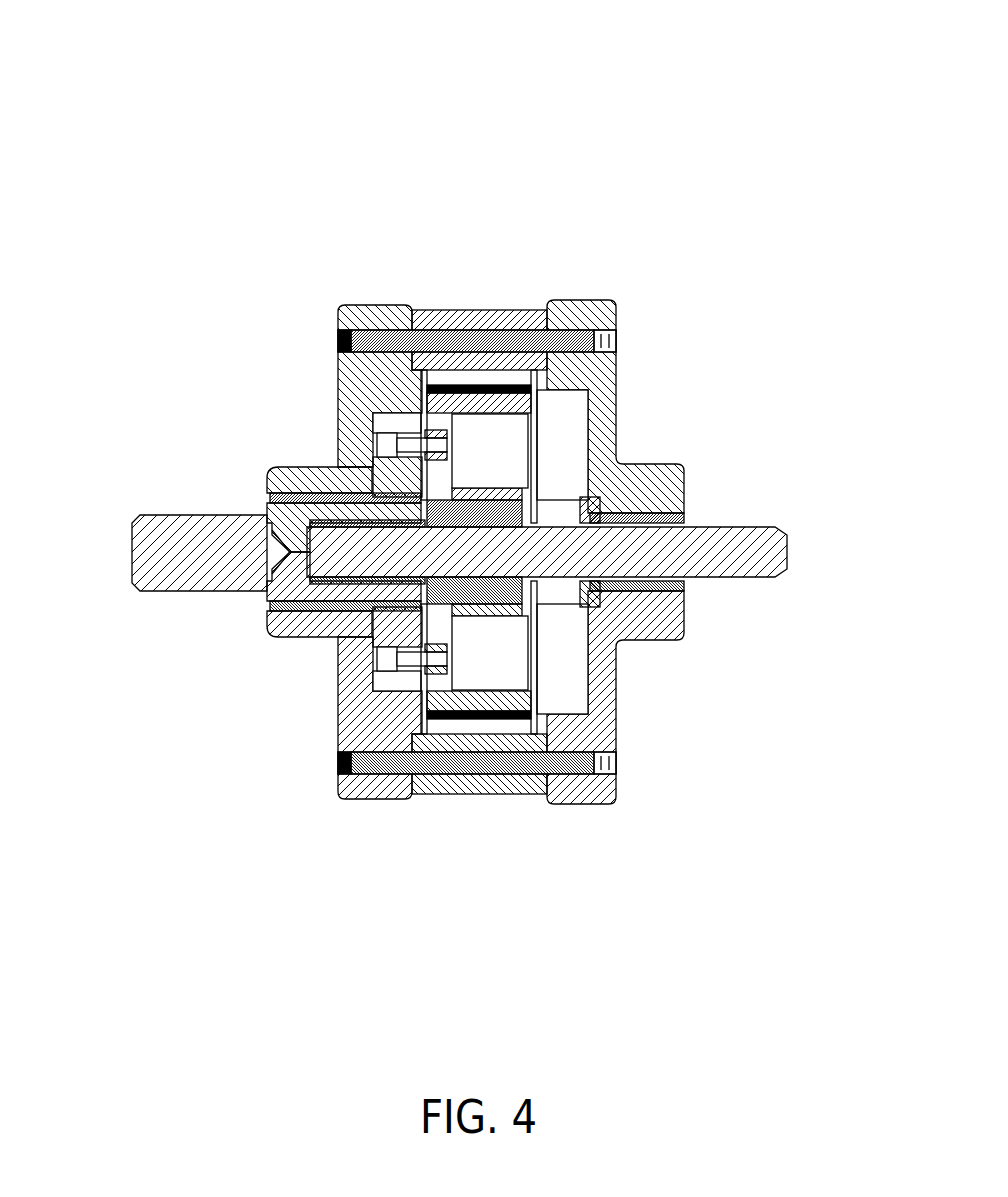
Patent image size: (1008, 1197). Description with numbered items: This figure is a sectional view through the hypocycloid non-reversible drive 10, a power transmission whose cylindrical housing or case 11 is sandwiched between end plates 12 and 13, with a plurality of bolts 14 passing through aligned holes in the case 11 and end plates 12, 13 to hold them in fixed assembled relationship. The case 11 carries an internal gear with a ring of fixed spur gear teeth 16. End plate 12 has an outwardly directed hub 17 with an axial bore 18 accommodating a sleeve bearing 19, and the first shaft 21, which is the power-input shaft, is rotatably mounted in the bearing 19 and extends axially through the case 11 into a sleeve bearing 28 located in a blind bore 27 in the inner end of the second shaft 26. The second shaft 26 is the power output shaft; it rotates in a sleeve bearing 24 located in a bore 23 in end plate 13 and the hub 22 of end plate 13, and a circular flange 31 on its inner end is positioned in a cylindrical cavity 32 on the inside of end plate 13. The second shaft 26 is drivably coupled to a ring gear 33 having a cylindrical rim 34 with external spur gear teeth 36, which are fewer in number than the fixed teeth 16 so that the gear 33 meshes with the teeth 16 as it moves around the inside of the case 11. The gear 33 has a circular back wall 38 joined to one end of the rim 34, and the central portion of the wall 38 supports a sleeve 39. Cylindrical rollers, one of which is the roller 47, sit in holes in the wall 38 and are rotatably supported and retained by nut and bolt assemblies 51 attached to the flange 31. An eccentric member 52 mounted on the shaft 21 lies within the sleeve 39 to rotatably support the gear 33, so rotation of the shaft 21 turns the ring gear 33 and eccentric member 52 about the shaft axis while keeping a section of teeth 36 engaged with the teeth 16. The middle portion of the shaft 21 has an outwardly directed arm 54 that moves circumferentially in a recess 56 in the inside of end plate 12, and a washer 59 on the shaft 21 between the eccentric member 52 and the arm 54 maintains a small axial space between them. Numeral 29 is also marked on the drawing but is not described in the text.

The hypocycloid non-reversible drive 10 is at (387, 233).
The cylindrical housing or case 11 is at (518, 308).
The end plate 12 is at (548, 462).
The end plate 13 is at (372, 800).
The bolts 14 is at (492, 450).
The fixed spur gear teeth 16 is at (462, 383).
The hub 17 is at (670, 490).
The axial bore 18 is at (620, 655).
The sleeve bearing 19 is at (683, 636).
The first shaft 21 is at (755, 552).
The hub 22 is at (280, 622).
The bore 23 is at (330, 478).
The sleeve bearing 24 is at (268, 613).
The second shaft 26 is at (202, 556).
The blind bore 27 is at (295, 550).
The sleeve bearing 28 is at (285, 505).
The flange 29 is at (336, 640).
The circular flange 31 is at (360, 655).
The cylindrical cavity 32 is at (424, 706).
The ring gear 33 is at (342, 802).
The cylindrical rim 34 is at (535, 415).
The external spur gear teeth 36 is at (575, 423).
The circular back wall 38 is at (358, 790).
The sleeve 39 is at (560, 760).
The roller 47 is at (352, 320).
The nut and bolt assemblies 51 is at (370, 392).
The eccentric member 52 is at (534, 720).
The arm 54 is at (536, 660).
The recess 56 is at (560, 473).
The washer 59 is at (520, 700).